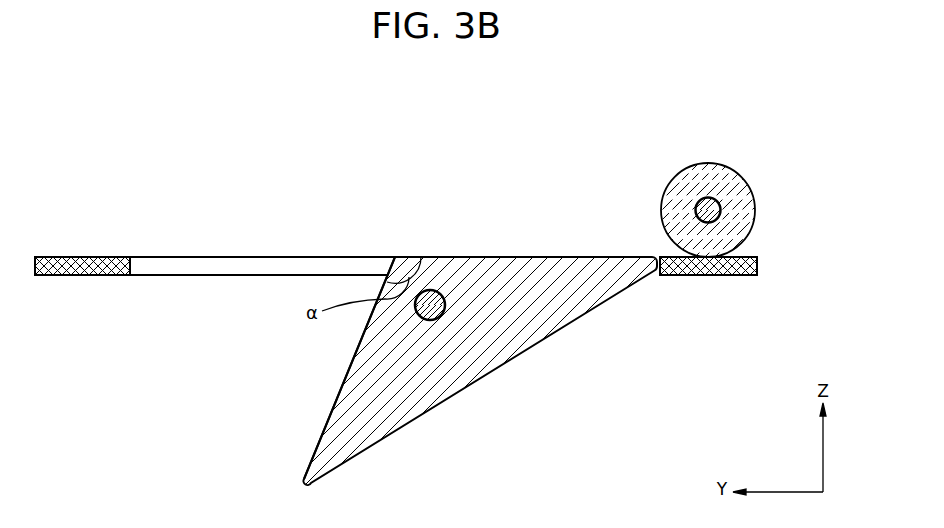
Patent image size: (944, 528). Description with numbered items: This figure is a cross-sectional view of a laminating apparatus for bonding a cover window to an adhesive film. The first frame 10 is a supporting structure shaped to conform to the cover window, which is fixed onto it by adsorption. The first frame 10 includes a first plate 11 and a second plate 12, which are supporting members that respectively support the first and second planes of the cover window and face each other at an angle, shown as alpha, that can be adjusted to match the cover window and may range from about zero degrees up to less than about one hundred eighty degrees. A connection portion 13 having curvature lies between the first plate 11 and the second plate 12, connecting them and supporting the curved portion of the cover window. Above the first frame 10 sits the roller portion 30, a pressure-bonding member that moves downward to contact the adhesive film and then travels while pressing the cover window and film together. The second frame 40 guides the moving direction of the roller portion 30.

The first frame 10 is at (497, 382).
The first plate 11 is at (531, 256).
The second plate 12 is at (336, 412).
The connection portion 13 is at (401, 264).
The roller portion 30 is at (708, 172).
The second frame 40 is at (757, 264).